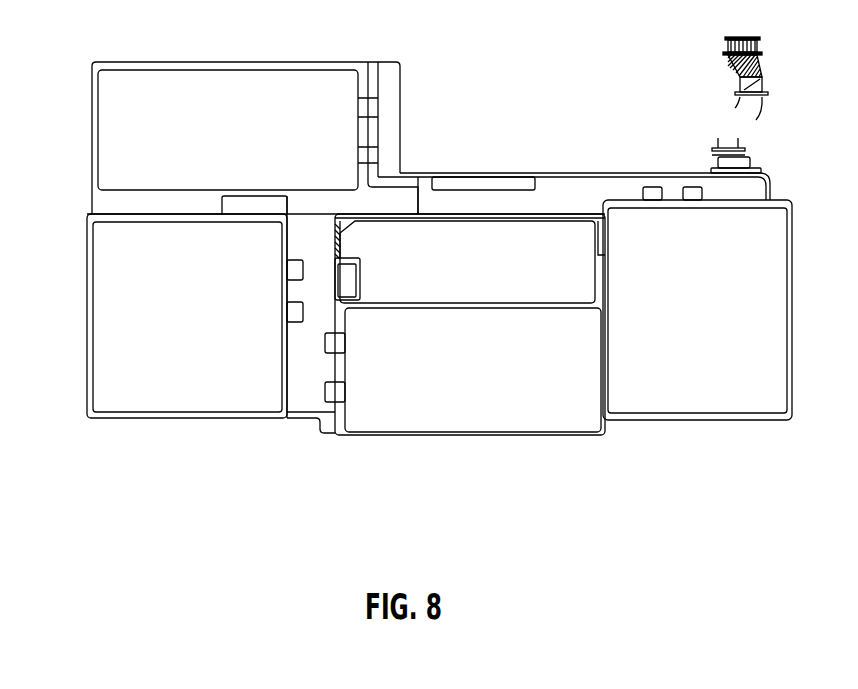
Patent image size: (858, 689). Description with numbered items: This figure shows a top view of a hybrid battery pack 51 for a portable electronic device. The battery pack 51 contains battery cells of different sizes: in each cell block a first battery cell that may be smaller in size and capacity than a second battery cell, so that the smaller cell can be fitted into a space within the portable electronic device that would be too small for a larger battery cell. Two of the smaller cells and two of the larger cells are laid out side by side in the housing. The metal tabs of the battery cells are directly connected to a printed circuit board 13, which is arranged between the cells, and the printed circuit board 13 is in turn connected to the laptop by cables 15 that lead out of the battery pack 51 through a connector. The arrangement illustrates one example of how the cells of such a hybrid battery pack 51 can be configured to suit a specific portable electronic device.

The hybrid battery pack 51 is at (468, 42).
The printed circuit board 13 is at (298, 400).
The cables 15 is at (762, 76).